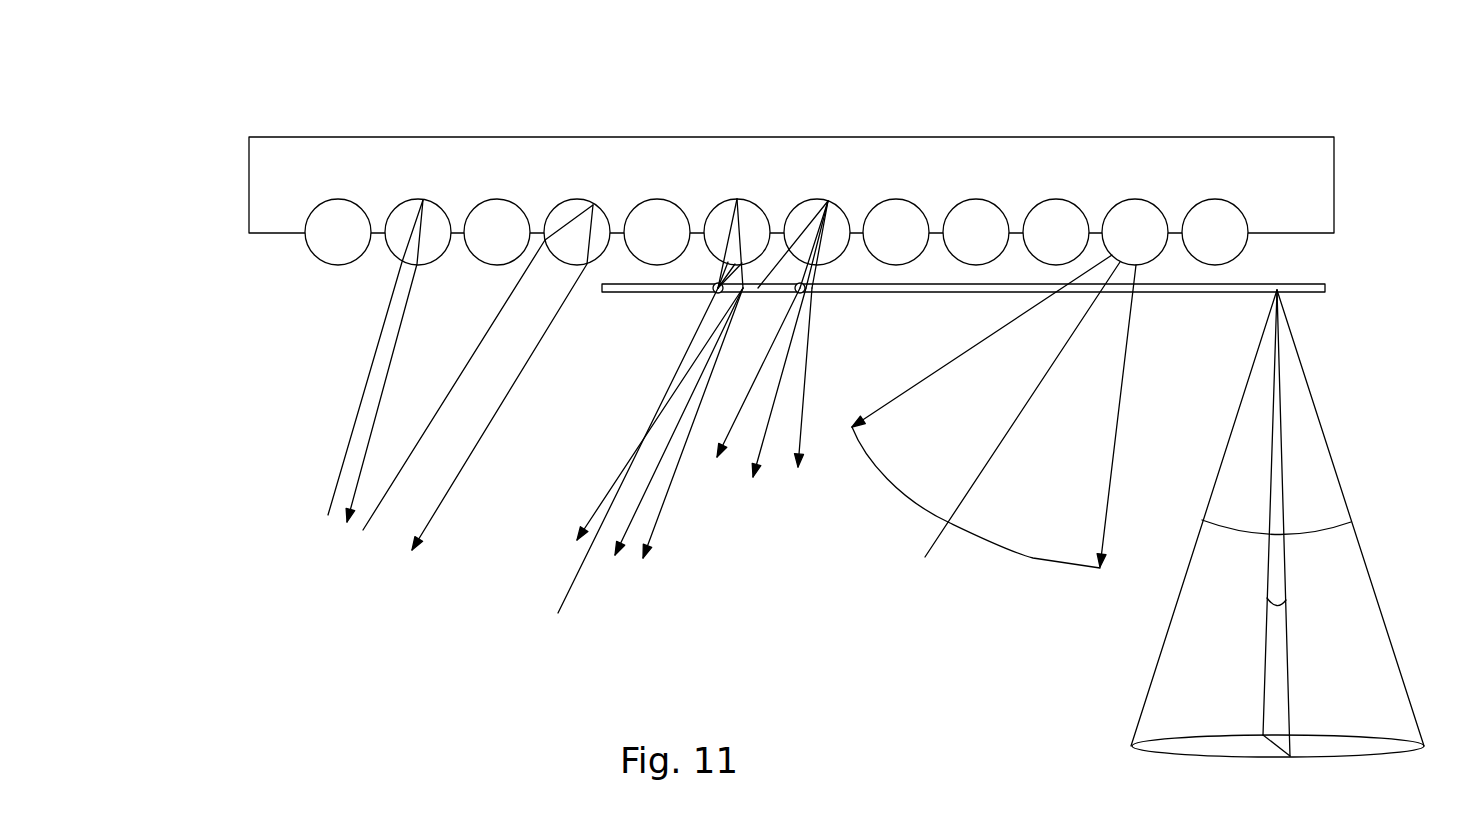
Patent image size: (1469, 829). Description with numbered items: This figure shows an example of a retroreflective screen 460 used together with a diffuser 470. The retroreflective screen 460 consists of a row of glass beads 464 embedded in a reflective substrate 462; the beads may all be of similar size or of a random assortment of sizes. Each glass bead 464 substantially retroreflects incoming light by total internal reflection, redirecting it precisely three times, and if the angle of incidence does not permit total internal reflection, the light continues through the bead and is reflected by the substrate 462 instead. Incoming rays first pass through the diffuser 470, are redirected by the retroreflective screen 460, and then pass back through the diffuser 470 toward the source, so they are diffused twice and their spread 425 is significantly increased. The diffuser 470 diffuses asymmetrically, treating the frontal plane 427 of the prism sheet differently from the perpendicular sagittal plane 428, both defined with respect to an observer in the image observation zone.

The retroreflective screen 460 is at (759, 178).
The reflective substrate 462 is at (495, 167).
The glass beads 464 is at (333, 244).
The diffuser 470 is at (1288, 283).
The spread of the image point rays 425 is at (1090, 394).
The frontal plane 427 is at (1226, 534).
The sagittal plane 428 is at (1267, 600).